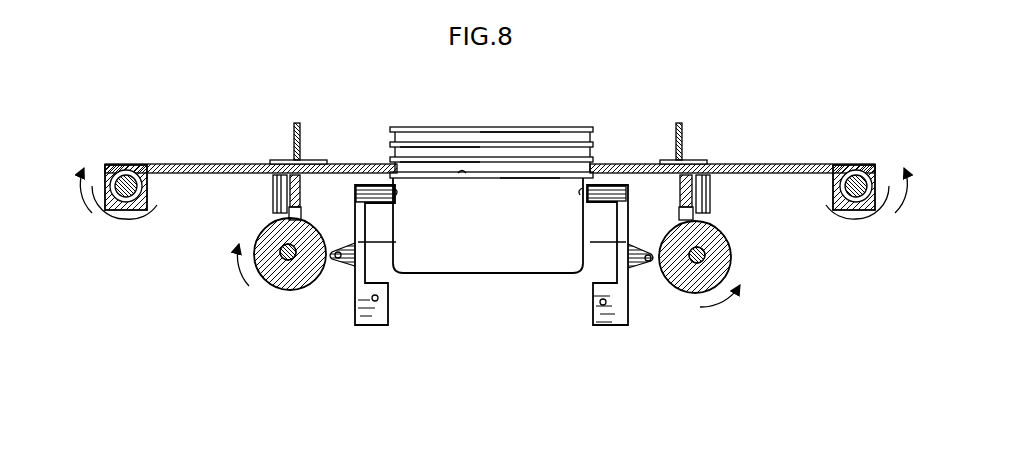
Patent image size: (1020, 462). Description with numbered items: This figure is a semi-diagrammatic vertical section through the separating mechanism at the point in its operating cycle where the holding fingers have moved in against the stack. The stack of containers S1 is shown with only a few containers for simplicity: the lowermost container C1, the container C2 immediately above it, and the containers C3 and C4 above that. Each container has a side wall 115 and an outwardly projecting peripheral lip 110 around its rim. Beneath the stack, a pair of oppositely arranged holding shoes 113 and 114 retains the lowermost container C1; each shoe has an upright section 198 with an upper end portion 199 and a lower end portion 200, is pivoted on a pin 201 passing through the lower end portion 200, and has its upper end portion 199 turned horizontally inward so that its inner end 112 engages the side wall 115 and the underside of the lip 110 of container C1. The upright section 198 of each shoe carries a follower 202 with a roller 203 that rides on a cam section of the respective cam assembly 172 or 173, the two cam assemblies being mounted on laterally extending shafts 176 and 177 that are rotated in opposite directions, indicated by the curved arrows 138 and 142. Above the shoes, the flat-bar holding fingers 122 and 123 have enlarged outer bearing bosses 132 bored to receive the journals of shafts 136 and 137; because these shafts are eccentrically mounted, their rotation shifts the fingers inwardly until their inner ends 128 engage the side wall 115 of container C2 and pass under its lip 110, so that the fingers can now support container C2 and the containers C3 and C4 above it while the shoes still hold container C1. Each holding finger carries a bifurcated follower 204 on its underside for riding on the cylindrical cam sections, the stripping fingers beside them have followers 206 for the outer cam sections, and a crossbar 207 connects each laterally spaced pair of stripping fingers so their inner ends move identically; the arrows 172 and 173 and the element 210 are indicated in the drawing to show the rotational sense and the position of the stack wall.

The lip 110 is at (462, 174).
The inner ends of holding shoes 112 is at (397, 188).
The holding shoe 113 is at (391, 311).
The holding shoe 114 is at (592, 308).
The side wall 115 is at (497, 252).
The holding finger 122 is at (188, 164).
The holding finger 123 is at (765, 164).
The inner ends of holding fingers 128 is at (398, 167).
The bearing boss 132 is at (105, 167).
The shaft 136 is at (125, 177).
The shaft 137 is at (854, 177).
The rotation arrow 138 is at (76, 215).
The rotation arrow 142 is at (863, 212).
The cam assembly 172 is at (258, 293).
The cam assembly 173 is at (742, 267).
The shaft 176 is at (262, 244).
The shaft 177 is at (707, 246).
The upright section 198 is at (396, 242).
The upper end portion 199 is at (356, 191).
The lower end portion 200 is at (377, 313).
The pin 201 is at (355, 305).
The follower 202 is at (342, 260).
The roller 203 is at (334, 246).
The follower 204 is at (287, 160).
The follower 206 is at (273, 190).
The crossbar 207 is at (296, 122).
The container stack wall 210 is at (490, 157).
The lowermost container C1 is at (506, 273).
The container C2 is at (506, 173).
The container C3 is at (392, 158).
The container C4 is at (392, 143).
The stack of containers S1 is at (554, 125).